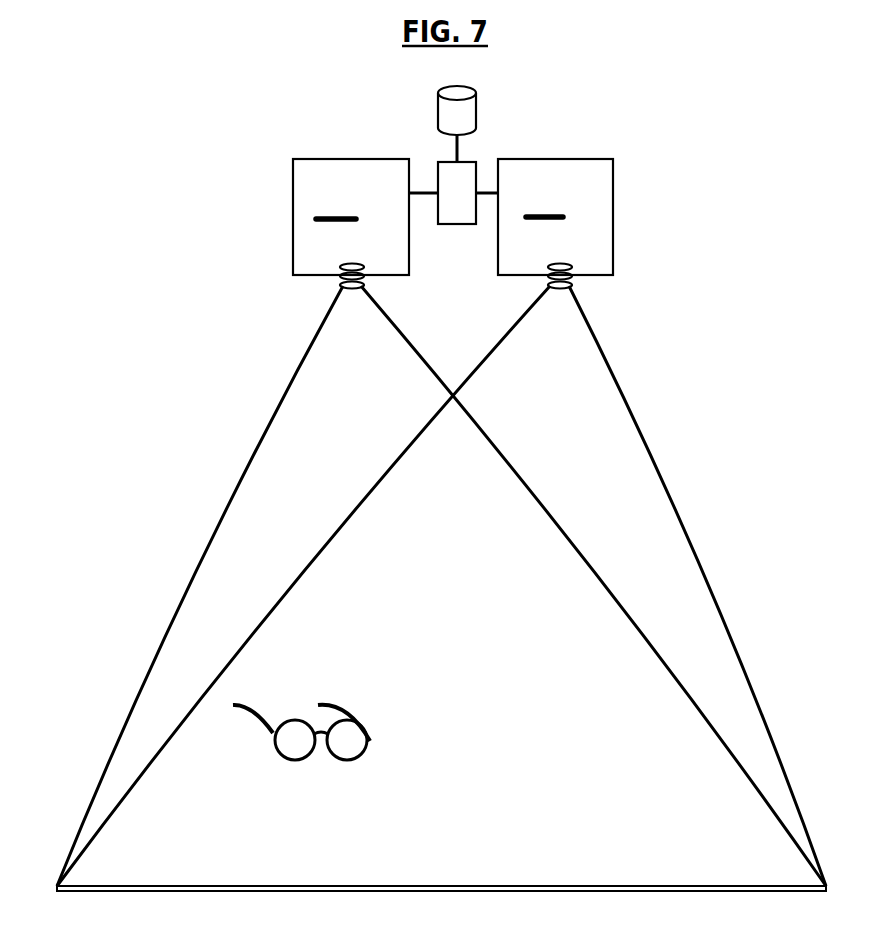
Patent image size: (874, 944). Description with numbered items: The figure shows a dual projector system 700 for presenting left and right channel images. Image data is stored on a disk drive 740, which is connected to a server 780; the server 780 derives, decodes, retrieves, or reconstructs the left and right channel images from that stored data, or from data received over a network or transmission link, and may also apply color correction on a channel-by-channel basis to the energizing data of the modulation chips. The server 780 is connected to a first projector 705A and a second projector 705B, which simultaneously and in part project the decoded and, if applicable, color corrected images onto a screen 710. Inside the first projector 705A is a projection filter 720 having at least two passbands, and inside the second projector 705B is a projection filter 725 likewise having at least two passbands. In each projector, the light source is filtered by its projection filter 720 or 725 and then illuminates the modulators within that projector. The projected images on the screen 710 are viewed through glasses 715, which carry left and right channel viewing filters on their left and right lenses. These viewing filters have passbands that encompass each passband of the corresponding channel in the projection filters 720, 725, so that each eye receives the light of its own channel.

The dual projector system 700 is at (140, 287).
The first projector 705A is at (441, 522).
The second projector 705B is at (441, 522).
The screen 710 is at (629, 886).
The glasses 715 is at (270, 745).
The projection filter 720 is at (318, 219).
The projection filter 725 is at (528, 217).
The disk drive 740 is at (442, 123).
The server 780 is at (480, 238).